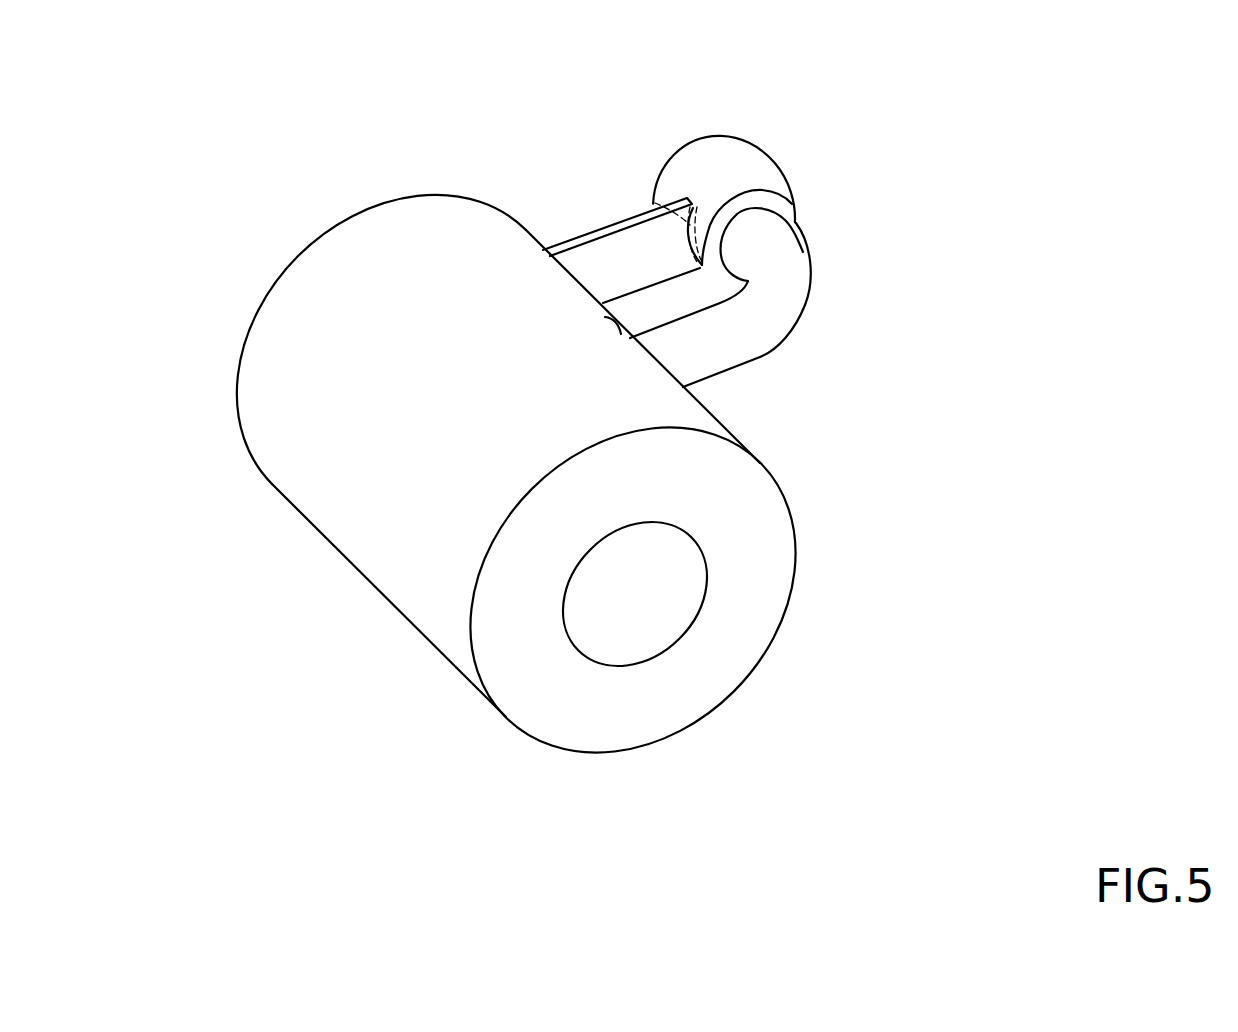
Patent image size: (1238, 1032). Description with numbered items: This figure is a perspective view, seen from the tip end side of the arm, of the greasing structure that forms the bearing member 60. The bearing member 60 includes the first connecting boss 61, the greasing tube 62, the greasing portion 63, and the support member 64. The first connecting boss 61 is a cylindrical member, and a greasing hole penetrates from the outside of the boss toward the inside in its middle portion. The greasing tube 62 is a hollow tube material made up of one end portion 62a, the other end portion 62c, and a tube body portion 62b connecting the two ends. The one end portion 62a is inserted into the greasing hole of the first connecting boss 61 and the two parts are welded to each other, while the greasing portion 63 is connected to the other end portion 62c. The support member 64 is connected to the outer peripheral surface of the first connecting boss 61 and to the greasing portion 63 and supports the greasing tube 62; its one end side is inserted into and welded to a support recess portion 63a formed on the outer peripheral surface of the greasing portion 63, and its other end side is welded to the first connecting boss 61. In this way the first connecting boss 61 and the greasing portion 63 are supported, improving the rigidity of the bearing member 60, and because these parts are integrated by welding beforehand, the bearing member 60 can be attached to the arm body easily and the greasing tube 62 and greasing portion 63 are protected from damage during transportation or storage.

The bearing member 60 is at (885, 110).
The first connecting boss 61 is at (297, 514).
The greasing tube 62 is at (789, 305).
The one end portion 62a is at (689, 389).
The tube body portion 62b is at (790, 327).
The other end portion 62c is at (787, 223).
The greasing portion 63 is at (784, 166).
The support recess portion 63a is at (652, 203).
The support member 64 is at (602, 227).